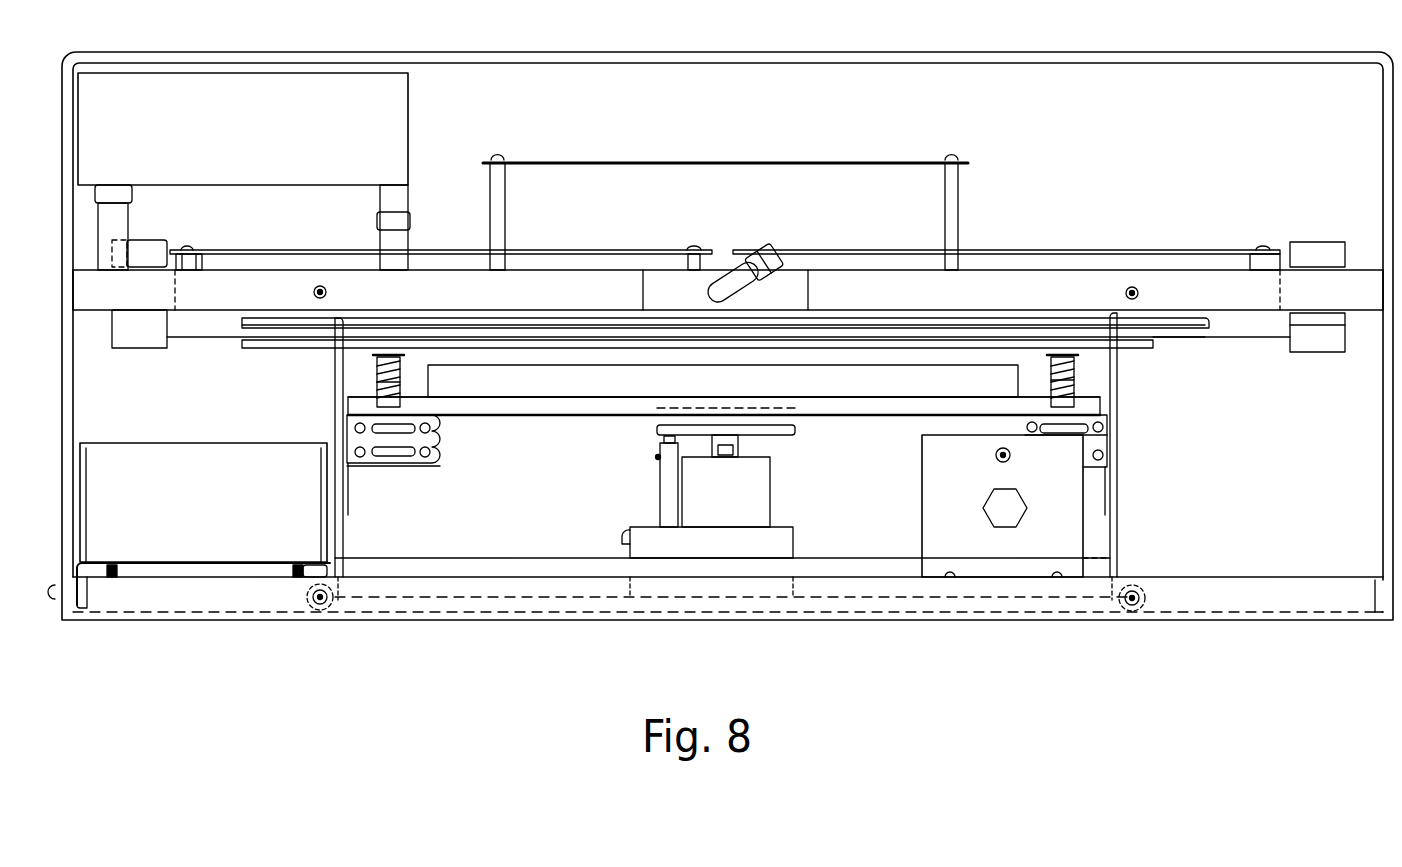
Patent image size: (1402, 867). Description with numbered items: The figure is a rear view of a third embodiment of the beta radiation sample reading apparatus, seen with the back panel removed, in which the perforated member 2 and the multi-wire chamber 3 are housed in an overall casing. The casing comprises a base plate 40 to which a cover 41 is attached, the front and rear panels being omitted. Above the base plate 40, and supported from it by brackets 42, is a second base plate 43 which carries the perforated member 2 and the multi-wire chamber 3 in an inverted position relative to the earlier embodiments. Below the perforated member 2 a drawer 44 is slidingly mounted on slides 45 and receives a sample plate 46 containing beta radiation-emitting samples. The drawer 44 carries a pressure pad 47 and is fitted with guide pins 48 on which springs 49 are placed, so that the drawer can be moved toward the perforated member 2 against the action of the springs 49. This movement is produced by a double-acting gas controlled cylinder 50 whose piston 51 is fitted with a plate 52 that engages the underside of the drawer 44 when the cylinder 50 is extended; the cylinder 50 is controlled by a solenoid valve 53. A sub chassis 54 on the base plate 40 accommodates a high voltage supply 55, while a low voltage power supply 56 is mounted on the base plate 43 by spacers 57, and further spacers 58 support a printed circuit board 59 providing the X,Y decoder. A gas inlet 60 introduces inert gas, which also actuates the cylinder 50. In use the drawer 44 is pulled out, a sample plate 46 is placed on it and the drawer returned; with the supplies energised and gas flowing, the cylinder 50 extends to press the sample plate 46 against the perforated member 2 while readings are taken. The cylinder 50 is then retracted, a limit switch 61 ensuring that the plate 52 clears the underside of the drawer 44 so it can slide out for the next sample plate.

The perforated member 2 is at (728, 310).
The multi-wire chamber 3 is at (1157, 350).
The base plate 40 is at (826, 620).
The cover 41 is at (960, 52).
The brackets 42 is at (343, 528).
The base plate 43 is at (1066, 280).
The drawer 44 is at (615, 415).
The slides 45 is at (440, 458).
The sample plate 46 is at (545, 415).
The pressure pad 47 is at (848, 390).
The guide pins 48 is at (377, 382).
The springs 49 is at (375, 362).
The double-acting gas controlled cylinder 50 is at (758, 492).
The piston 51 is at (748, 443).
The plate 52 is at (795, 431).
The solenoid valve 53 is at (787, 542).
The sub chassis 54 is at (250, 563).
The high voltage supply 55 is at (226, 513).
The low voltage power supply 56 is at (264, 148).
The spacers 57 is at (125, 224).
The spacers 58 is at (505, 226).
The printed circuit board 59 is at (715, 163).
The gas inlet 60 is at (775, 278).
The limit switch 61 is at (658, 463).